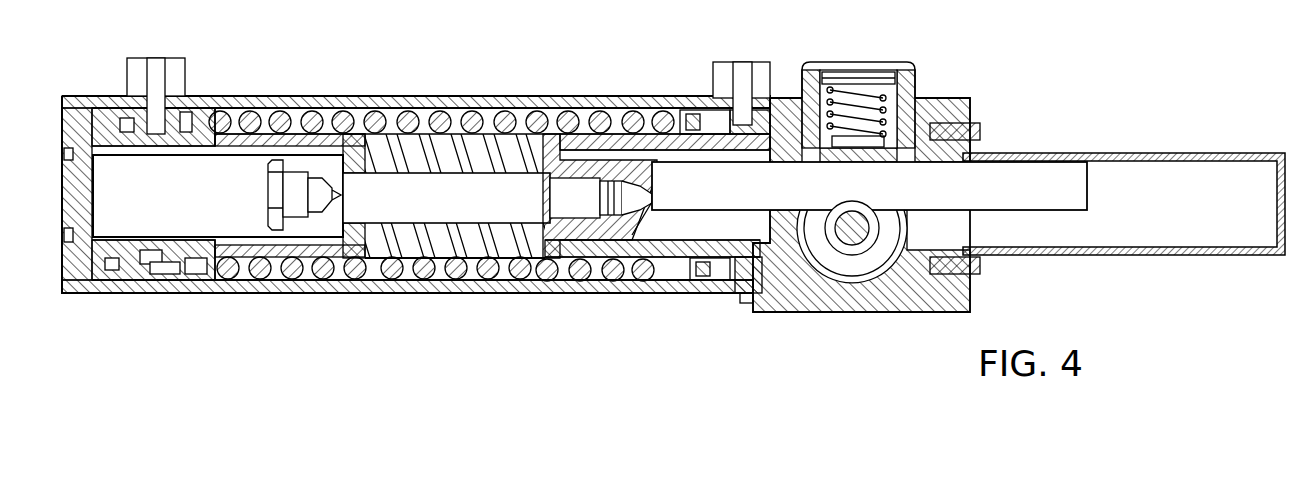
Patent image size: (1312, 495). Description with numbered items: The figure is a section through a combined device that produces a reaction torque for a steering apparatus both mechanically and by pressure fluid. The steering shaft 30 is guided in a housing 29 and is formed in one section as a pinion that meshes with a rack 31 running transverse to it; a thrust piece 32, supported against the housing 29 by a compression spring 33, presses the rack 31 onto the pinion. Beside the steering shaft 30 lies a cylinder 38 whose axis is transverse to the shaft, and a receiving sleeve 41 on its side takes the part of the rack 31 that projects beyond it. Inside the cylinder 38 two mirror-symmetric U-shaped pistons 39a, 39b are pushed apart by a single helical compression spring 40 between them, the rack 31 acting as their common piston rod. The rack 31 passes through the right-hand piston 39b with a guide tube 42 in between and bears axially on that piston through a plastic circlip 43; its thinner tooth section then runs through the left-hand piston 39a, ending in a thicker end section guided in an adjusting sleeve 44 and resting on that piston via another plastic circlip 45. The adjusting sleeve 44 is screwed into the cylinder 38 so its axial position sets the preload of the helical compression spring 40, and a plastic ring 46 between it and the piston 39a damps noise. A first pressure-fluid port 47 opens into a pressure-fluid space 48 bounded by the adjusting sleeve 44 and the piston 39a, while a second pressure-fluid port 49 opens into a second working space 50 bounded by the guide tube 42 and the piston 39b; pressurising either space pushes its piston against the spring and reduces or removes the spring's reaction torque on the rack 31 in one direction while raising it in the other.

The housing 29 is at (820, 303).
The steering shaft 30 is at (868, 250).
The rack 31 is at (1020, 178).
The thrust piece 32 is at (917, 100).
The compression spring 33 is at (867, 97).
The cylinder 38 is at (430, 97).
The piston 39a is at (232, 133).
The piston 39b is at (613, 143).
The helical compression spring 40 is at (423, 280).
The receiving sleeve 41 is at (1188, 152).
The guide tube 42 is at (672, 272).
The plastic circlip 43 is at (547, 157).
The adjusting sleeve 44 is at (128, 283).
The plastic circlip 45 is at (362, 172).
The plastic ring 46 is at (135, 132).
The first pressure-fluid port 47 is at (157, 62).
The pressure-fluid space 48 is at (157, 290).
The second pressure-fluid port 49 is at (745, 62).
The second working space 50 is at (740, 287).